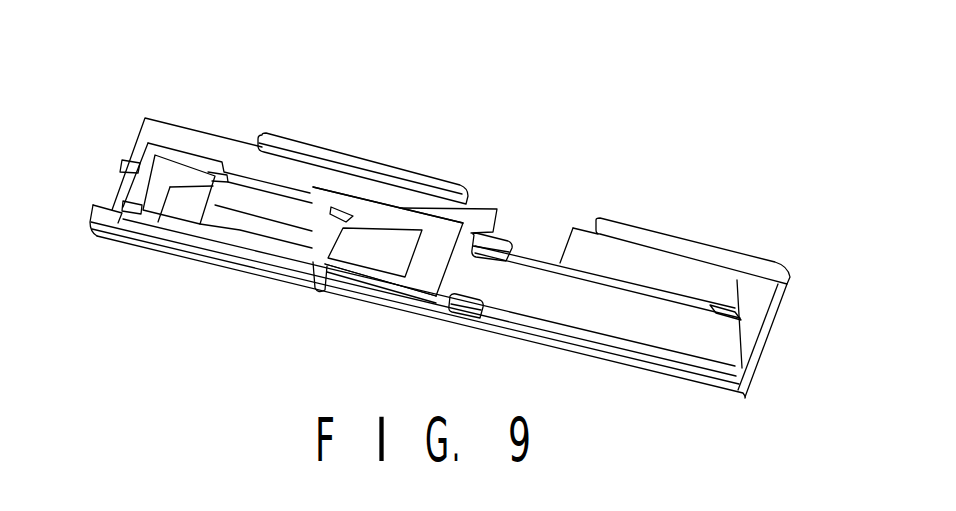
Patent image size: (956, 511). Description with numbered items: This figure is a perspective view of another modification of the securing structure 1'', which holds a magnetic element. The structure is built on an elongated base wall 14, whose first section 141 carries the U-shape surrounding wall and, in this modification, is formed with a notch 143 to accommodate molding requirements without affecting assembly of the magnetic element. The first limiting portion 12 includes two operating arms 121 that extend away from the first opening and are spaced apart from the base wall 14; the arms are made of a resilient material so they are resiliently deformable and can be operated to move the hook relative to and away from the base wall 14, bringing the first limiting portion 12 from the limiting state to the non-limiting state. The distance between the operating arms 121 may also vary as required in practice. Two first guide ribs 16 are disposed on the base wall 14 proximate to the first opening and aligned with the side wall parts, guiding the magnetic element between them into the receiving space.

The securing structure 1'' is at (440, 249).
The first limiting portion 12 is at (408, 203).
The operating arms 121 is at (373, 203).
The base wall 14 is at (441, 317).
The first section 141 is at (262, 212).
The notch 143 is at (357, 253).
The first guide ribs 16 is at (506, 240).